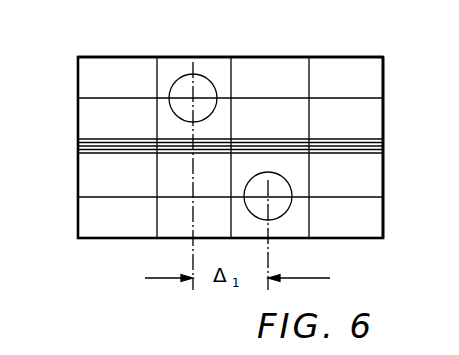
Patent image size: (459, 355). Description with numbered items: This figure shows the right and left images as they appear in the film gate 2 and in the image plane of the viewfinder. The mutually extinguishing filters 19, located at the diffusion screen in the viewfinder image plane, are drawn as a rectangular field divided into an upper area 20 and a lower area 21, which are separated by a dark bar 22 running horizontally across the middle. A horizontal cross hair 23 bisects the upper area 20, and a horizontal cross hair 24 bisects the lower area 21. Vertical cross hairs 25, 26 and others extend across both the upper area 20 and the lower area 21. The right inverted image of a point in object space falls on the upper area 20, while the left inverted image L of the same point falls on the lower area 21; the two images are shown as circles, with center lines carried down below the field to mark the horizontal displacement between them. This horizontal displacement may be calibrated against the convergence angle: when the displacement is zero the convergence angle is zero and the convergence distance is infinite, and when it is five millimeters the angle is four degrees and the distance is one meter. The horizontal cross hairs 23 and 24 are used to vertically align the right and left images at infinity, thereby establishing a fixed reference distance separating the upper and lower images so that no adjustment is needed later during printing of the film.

The mutually extinguishing filters 19 is at (98, 40).
The upper area 20 is at (377, 71).
The lower area 21 is at (383, 214).
The dark bar 22 is at (383, 149).
The horizontal cross hair 23 is at (78, 98).
The horizontal cross hair 24 is at (78, 197).
The vertical cross hair 25 is at (170, 42).
The vertical cross hair 26 is at (236, 70).
The gate 2 is at (193, 98).
The left inverted image L is at (272, 198).